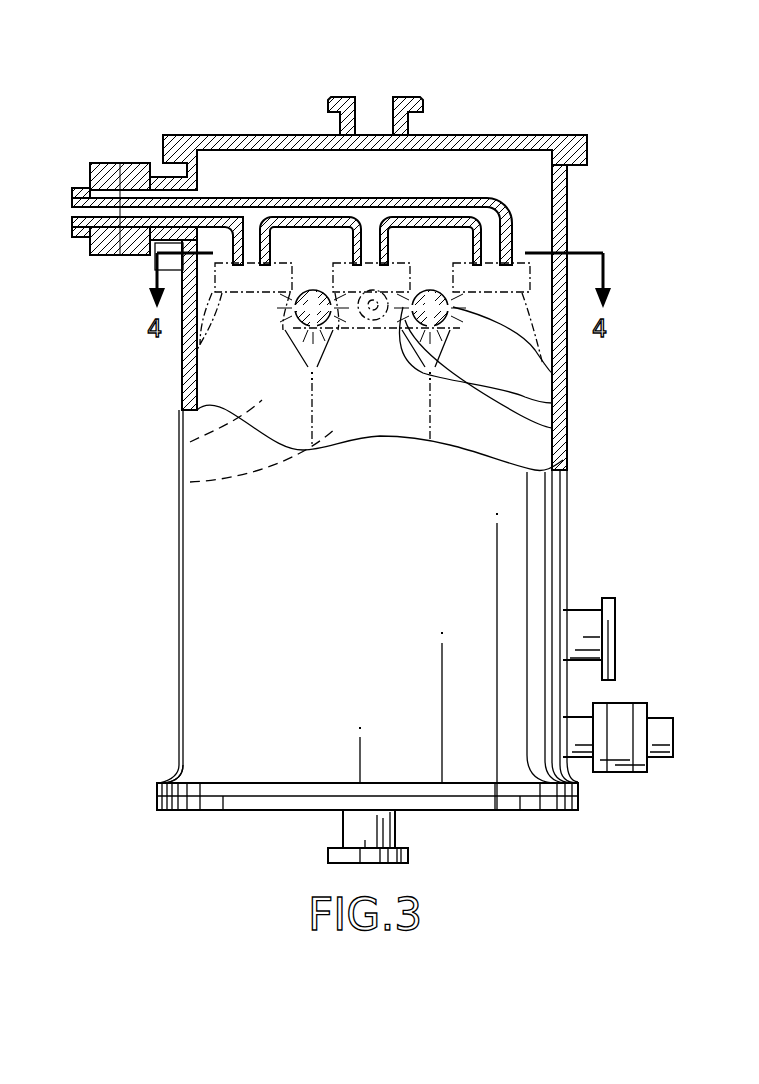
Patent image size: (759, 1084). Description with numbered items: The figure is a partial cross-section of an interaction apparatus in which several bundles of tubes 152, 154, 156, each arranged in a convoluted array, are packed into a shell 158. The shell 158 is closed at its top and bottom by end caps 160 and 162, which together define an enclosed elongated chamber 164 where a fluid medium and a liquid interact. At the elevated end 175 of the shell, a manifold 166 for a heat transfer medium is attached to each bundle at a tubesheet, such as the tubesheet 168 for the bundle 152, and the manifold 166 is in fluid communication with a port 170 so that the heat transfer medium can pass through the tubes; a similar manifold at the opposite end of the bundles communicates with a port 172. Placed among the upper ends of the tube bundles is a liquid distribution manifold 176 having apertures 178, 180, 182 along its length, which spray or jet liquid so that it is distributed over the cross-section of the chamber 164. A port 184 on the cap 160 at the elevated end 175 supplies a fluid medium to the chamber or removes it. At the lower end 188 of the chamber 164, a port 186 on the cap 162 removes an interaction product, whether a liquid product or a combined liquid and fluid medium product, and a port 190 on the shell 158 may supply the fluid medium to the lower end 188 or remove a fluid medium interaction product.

The bundle of tubes 152 is at (200, 437).
The bundle of tubes 154 is at (200, 481).
The bundle of tubes 156 is at (552, 460).
The shell 158 is at (182, 590).
The end cap 160 is at (555, 135).
The end cap 162 is at (497, 811).
The elongated chamber 164 is at (532, 193).
The manifold 166 is at (290, 197).
The tubesheet 168 is at (183, 348).
The port 170 is at (73, 212).
The port 172 is at (660, 716).
The elevated end 175 is at (567, 180).
The liquid distribution manifold 176 is at (410, 293).
The aperture 178 is at (552, 373).
The aperture 180 is at (552, 403).
The aperture 182 is at (552, 425).
The port 184 is at (392, 97).
The port 186 is at (330, 870).
The lower end 188 is at (182, 780).
The port 190 is at (617, 632).